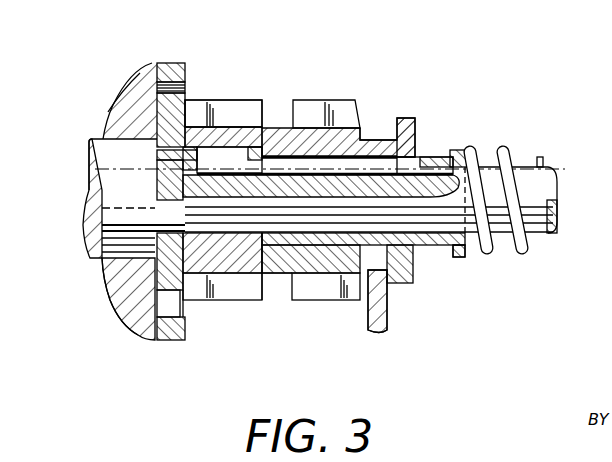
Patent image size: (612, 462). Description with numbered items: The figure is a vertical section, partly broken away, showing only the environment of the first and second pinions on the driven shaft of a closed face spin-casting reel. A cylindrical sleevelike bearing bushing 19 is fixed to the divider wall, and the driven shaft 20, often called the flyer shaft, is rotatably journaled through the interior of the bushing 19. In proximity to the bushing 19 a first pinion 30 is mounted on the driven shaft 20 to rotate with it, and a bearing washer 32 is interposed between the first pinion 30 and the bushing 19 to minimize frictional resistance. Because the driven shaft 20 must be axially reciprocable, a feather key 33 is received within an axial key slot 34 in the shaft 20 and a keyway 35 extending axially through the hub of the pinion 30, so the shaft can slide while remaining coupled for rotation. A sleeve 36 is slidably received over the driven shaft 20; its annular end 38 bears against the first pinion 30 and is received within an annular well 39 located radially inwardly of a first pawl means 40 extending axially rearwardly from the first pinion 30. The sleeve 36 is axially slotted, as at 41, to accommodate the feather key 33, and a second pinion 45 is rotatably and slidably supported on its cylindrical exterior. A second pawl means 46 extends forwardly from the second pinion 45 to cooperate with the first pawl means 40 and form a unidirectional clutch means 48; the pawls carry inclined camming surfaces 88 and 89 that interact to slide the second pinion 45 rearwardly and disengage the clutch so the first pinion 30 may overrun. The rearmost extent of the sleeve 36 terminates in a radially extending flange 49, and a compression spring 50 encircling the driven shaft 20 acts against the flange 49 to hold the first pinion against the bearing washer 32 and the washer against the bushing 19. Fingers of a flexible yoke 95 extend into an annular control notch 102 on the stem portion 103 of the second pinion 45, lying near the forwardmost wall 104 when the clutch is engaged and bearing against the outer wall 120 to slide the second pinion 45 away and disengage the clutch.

The bearing bushing 19 is at (106, 288).
The driven shaft 20 is at (107, 167).
The first pinion 30 is at (223, 98).
The bearing washer 32 is at (108, 112).
The feather key 33 is at (277, 158).
The axial key slot 34 is at (300, 200).
The keyway 35 is at (158, 153).
The sleeve 36 is at (428, 247).
The annular end 38 is at (254, 249).
The annular well 39 is at (266, 157).
The first pawl means 40 is at (223, 114).
The axial slot 41 is at (418, 162).
The second pinion 45 is at (345, 99).
The second pawl means 46 is at (294, 246).
The unidirectional clutch means 48 is at (272, 262).
The flange 49 is at (463, 150).
The compression spring 50 is at (518, 253).
The inclined camming surface 88 is at (254, 150).
The inclined camming surface 89 is at (276, 248).
The flexible yoke 95 is at (381, 338).
The annular control notch 102 is at (380, 138).
The stem portion 103 is at (415, 120).
The forwardmost wall 104 is at (364, 273).
The outer wall 120 is at (396, 283).